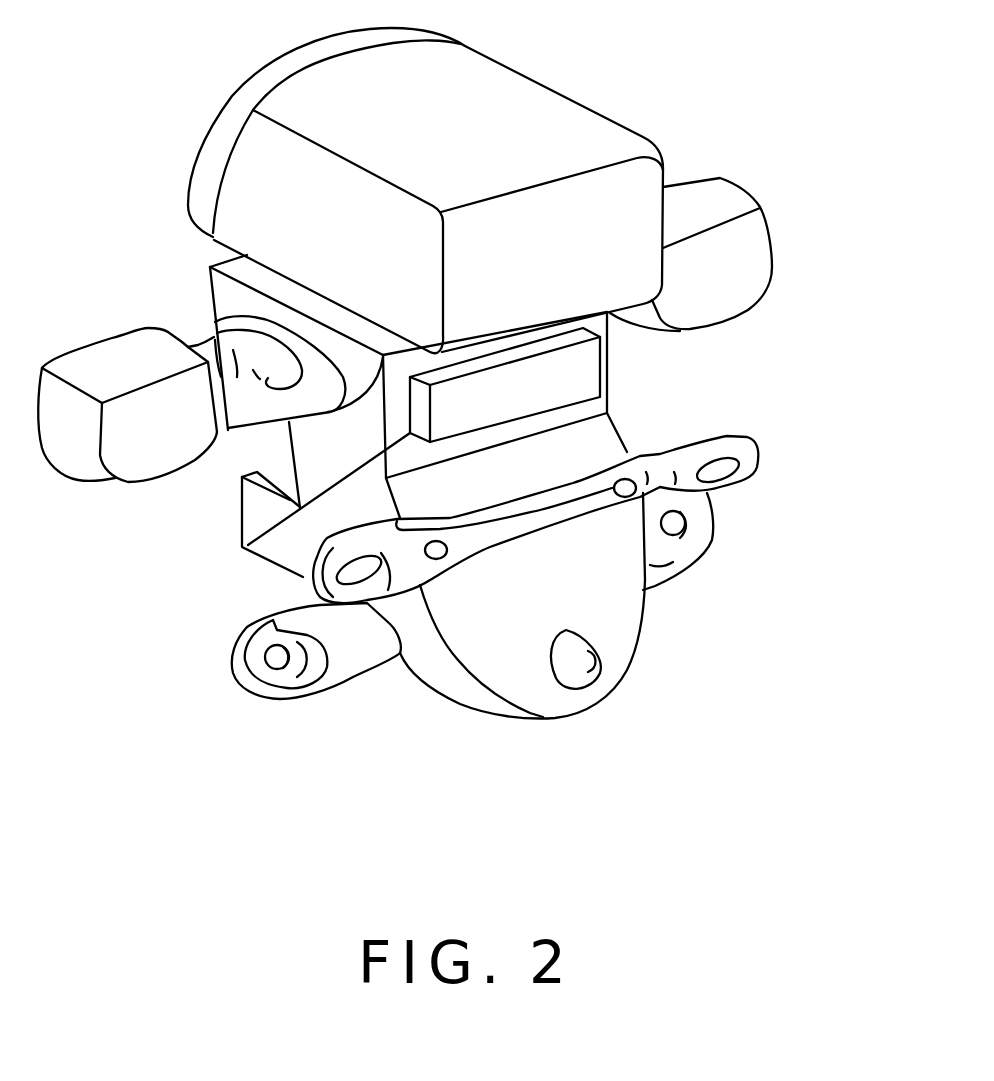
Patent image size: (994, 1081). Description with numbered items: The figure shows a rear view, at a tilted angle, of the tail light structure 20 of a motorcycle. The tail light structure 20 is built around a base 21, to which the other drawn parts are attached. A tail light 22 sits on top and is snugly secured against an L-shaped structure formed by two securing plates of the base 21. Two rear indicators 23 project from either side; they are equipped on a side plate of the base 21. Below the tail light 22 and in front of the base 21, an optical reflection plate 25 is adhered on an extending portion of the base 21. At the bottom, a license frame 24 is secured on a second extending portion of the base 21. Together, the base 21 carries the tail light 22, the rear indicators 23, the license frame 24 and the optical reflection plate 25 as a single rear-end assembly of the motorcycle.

The tail light structure 20 is at (256, 775).
The base 21 is at (243, 547).
The tail light 22 is at (493, 84).
The rear indicators 23 is at (692, 198).
The license frame 24 is at (740, 433).
The optical reflection plate 25 is at (580, 370).